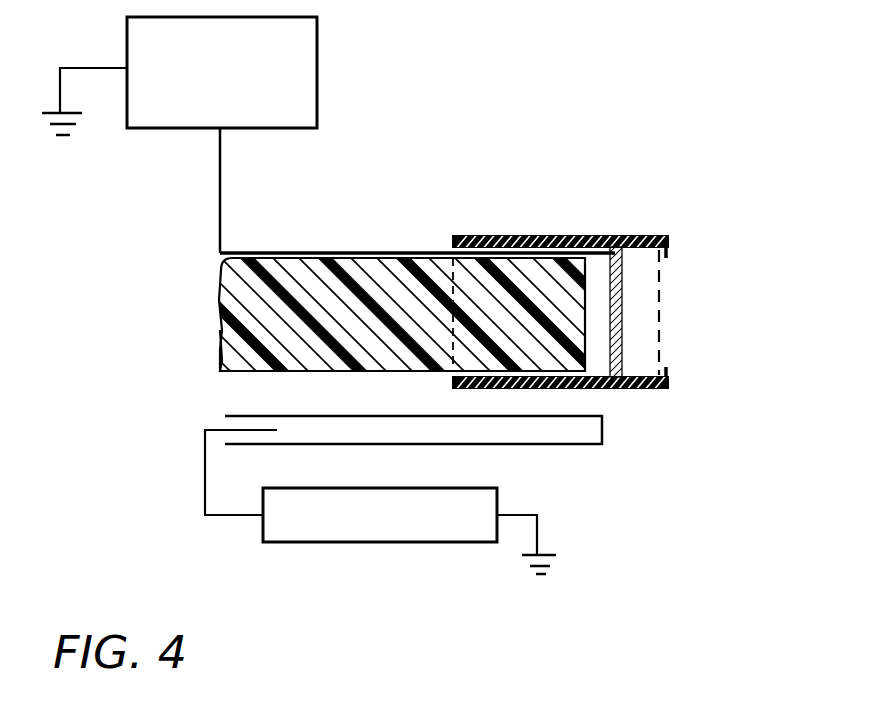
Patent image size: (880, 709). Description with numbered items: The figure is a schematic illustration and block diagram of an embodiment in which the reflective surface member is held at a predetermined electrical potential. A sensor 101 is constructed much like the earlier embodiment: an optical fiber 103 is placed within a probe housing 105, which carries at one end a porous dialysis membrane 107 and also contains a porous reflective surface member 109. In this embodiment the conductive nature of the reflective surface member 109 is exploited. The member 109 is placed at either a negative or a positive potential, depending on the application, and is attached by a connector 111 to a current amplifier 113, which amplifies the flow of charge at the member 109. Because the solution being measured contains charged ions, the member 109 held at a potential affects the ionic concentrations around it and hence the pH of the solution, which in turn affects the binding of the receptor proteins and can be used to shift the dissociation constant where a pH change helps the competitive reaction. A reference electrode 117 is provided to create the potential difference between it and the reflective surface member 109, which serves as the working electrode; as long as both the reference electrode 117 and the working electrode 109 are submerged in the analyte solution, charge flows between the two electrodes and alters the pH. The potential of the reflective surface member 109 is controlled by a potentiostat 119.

The sensor 101 is at (370, 373).
The optical fiber 103 is at (253, 357).
The probe housing 105 is at (559, 236).
The porous dialysis membrane 107 is at (663, 300).
The porous reflective surface member 109 is at (617, 348).
The connector 111 is at (336, 252).
The current amplifier 113 is at (317, 72).
The reference electrode 117 is at (568, 445).
The potentiostat 119 is at (306, 532).